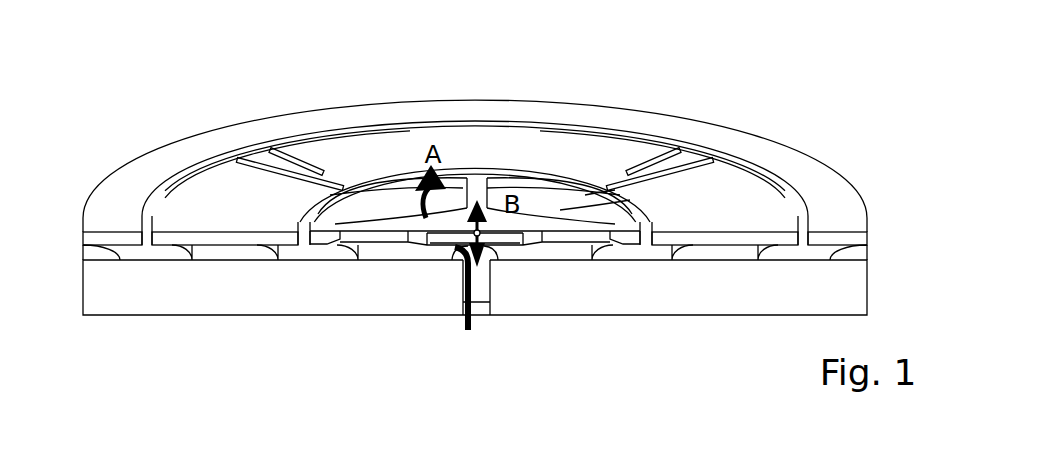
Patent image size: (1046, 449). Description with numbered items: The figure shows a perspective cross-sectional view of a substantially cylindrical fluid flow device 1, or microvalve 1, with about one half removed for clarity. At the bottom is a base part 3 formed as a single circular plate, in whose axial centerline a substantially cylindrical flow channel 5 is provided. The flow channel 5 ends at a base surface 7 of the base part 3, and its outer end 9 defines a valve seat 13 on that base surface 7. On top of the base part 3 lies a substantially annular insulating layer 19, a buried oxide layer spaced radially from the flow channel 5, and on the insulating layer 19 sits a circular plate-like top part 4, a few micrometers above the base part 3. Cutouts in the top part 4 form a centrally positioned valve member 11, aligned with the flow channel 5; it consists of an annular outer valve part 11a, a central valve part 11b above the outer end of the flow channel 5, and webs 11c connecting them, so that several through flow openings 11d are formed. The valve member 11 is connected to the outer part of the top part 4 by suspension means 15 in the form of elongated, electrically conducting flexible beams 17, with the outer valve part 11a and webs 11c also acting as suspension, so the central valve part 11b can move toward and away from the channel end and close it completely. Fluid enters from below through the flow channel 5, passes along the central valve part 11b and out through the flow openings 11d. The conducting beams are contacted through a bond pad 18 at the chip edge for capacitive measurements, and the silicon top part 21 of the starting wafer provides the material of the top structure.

The fluid flow device 1 is at (182, 90).
The base part 3 is at (170, 292).
The top part 4 is at (110, 237).
The flow channel 5 is at (478, 290).
The base surface 7 is at (337, 247).
The end of the flow channel 9 is at (513, 252).
The valve member 11 is at (443, 227).
The annular outer valve part 11a is at (603, 207).
The central valve part 11b is at (620, 210).
The webs 11c is at (525, 250).
The through flow openings 11d is at (397, 203).
The valve seat 13 is at (523, 252).
The suspension means 15 is at (350, 165).
The flexible beams 17 is at (338, 188).
The bond pad 18 is at (843, 231).
The insulating layer 19 is at (93, 250).
The top part 21 is at (487, 142).